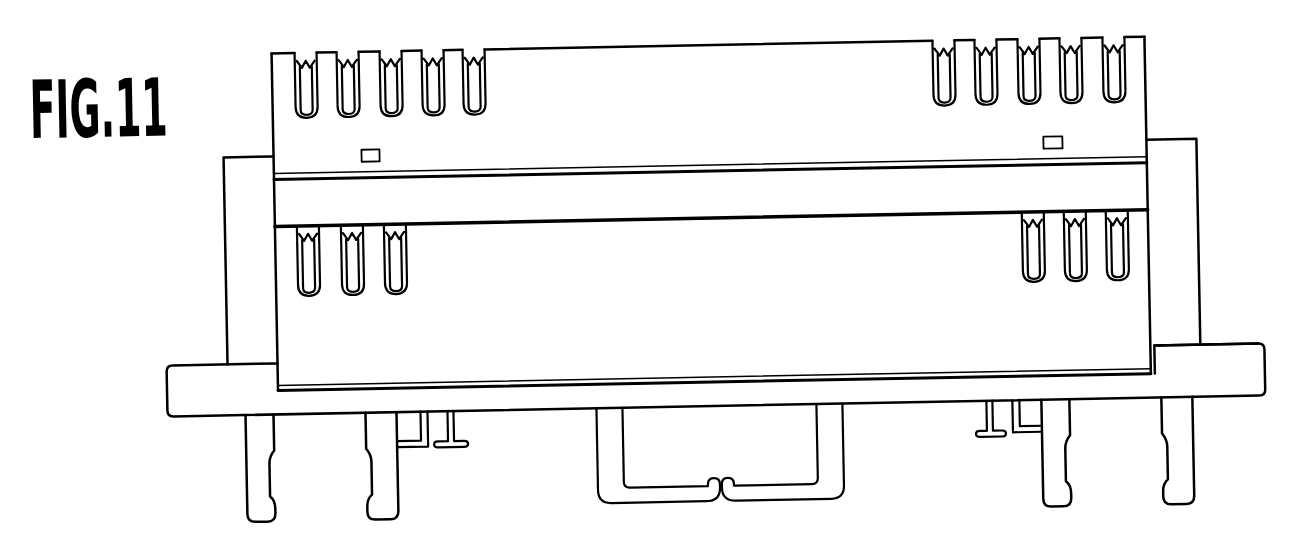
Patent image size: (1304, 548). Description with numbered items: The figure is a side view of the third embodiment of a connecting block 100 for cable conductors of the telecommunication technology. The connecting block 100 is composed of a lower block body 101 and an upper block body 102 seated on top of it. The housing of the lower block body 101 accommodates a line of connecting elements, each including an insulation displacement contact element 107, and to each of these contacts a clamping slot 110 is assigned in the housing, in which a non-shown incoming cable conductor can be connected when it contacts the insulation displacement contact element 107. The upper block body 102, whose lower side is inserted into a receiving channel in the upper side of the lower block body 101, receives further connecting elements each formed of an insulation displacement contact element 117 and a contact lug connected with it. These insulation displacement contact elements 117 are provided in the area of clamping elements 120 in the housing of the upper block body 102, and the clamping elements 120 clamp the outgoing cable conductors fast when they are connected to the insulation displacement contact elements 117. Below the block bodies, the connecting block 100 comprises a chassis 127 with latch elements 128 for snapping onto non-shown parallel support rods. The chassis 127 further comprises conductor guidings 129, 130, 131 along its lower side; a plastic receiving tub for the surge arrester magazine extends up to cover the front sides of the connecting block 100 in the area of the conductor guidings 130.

The connecting block 100 is at (1170, 129).
The lower block body 101 is at (1152, 298).
The upper block body 102 is at (511, 46).
The insulation displacement contact element 107 is at (300, 262).
The clamping slot 110 is at (298, 239).
The insulation displacement contact element 117 is at (301, 85).
The clamping element 120 is at (303, 53).
The chassis 127 is at (1222, 358).
The latch element 128 is at (318, 467).
The conductor guiding 129 is at (832, 466).
The conductor guiding 130 is at (1238, 398).
The conductor guiding 131 is at (448, 442).